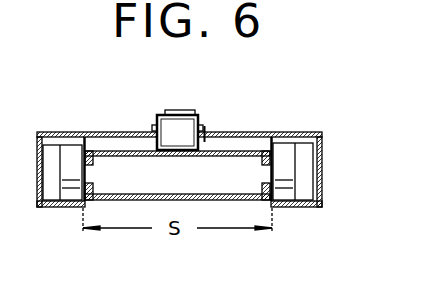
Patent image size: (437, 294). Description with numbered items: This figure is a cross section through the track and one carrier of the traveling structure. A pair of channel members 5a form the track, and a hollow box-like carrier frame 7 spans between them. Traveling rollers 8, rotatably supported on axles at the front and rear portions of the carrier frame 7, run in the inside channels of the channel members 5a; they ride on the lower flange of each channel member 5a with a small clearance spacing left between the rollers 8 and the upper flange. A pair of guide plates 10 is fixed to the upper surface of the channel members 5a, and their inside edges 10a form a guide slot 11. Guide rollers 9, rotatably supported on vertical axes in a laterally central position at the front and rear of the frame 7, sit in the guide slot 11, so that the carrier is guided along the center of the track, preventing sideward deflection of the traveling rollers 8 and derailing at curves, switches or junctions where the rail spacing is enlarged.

The channel members 5a is at (321, 148).
The guide plates 10 is at (119, 131).
The inside edges 10a is at (158, 117).
The guide rollers 9 is at (200, 132).
The guide slot 11 is at (205, 130).
The traveling rollers 8 is at (288, 181).
The carrier frame 7 is at (137, 200).